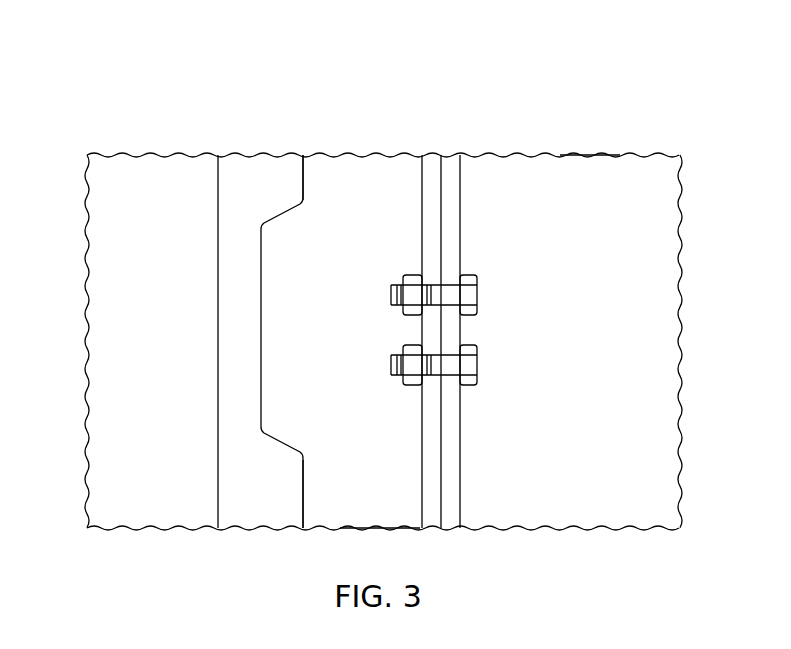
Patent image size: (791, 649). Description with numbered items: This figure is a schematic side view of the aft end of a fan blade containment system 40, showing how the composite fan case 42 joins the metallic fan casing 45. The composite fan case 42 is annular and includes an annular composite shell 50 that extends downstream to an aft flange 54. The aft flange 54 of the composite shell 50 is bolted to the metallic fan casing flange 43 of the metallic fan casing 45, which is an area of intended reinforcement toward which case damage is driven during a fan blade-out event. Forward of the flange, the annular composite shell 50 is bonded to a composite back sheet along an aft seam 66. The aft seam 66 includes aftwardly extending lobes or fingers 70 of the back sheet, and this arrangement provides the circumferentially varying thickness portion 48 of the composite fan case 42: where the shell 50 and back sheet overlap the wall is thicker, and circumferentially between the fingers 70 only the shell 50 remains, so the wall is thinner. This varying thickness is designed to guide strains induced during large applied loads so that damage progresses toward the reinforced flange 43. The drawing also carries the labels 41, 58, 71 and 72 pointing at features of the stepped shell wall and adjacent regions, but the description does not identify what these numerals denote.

The fan blade containment system 40 is at (240, 117).
The reflected energy 41 is at (485, 135).
The composite fan case 42 is at (375, 530).
The metallic fan casing flange 43 is at (461, 457).
The metallic fan casing 45 is at (596, 155).
The circumferentially varying thickness portion 48 is at (288, 153).
The annular composite shell 50 is at (367, 170).
The aft flange 54 is at (422, 428).
The first flange 58 is at (202, 510).
The aft seam 66 is at (233, 172).
The lobes or fingers 70 is at (287, 477).
The lower bend 71 is at (289, 454).
The offset portion 72 is at (278, 316).